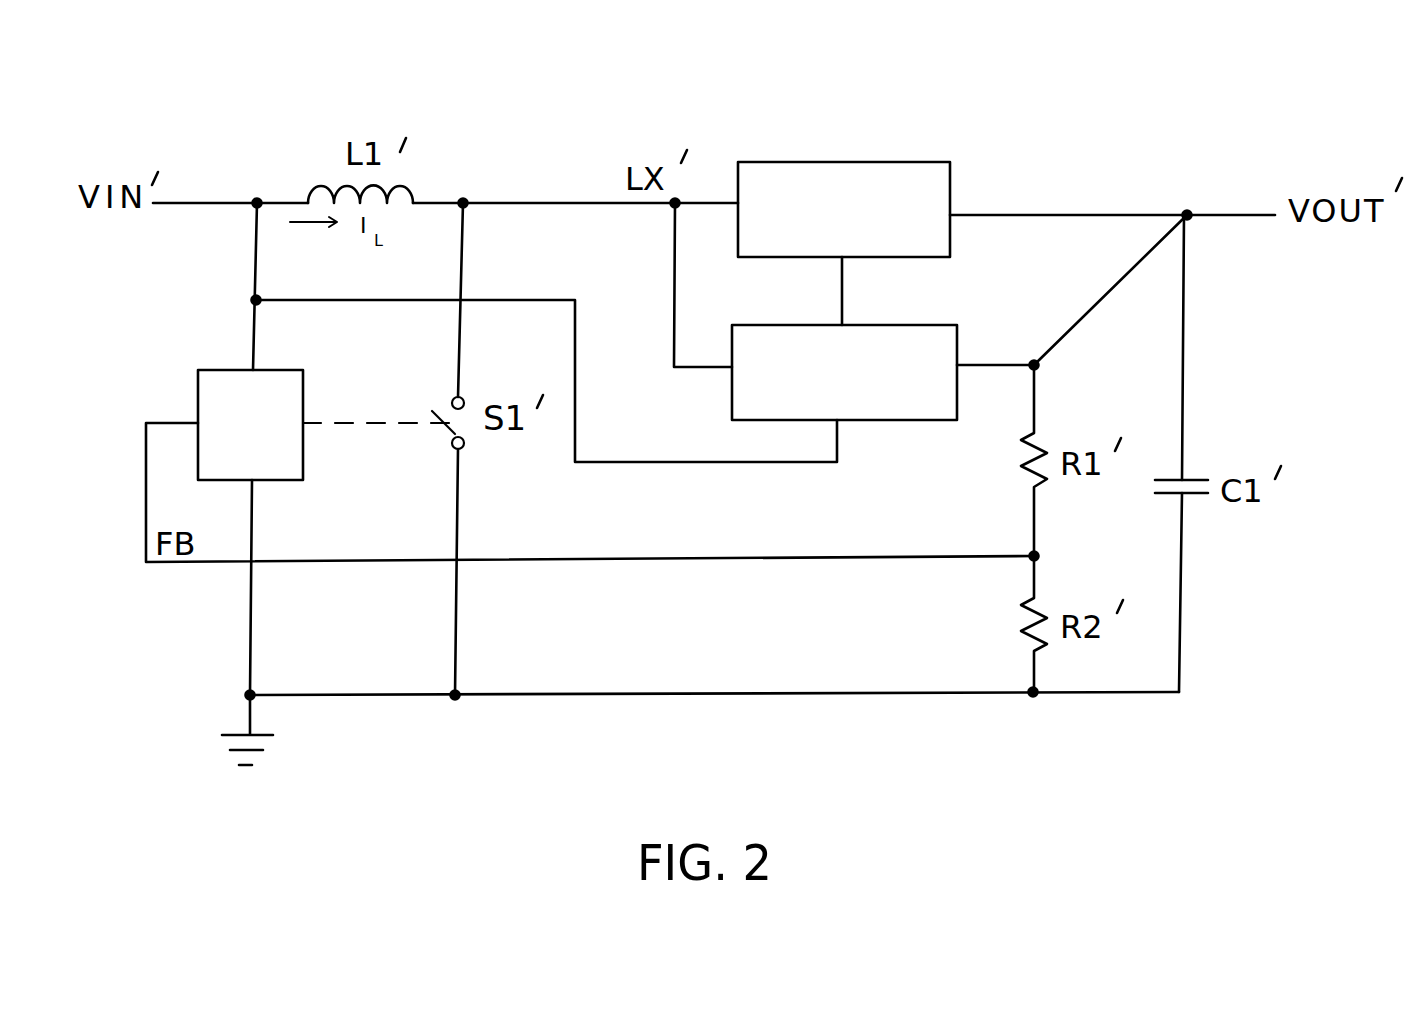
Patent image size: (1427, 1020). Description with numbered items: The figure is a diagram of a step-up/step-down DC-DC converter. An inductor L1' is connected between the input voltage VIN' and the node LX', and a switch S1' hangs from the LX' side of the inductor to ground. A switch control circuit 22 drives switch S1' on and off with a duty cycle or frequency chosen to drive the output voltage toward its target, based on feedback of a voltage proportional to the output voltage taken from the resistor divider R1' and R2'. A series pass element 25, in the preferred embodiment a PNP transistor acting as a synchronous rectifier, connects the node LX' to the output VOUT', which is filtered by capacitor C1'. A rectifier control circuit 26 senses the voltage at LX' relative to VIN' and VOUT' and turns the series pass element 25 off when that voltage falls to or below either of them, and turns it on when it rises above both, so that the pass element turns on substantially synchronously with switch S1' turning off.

The switch control circuit 22 is at (225, 370).
The series pass element 25 is at (908, 162).
The rectifier control circuit 26 is at (898, 325).